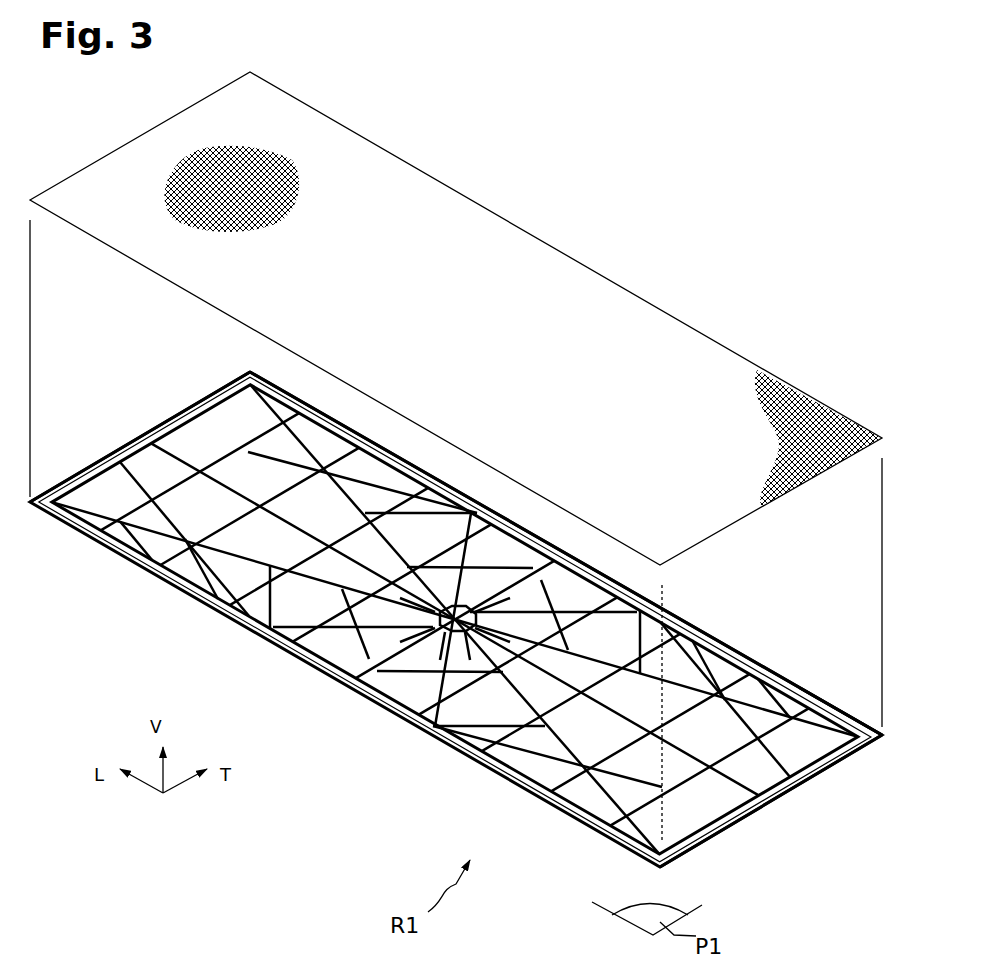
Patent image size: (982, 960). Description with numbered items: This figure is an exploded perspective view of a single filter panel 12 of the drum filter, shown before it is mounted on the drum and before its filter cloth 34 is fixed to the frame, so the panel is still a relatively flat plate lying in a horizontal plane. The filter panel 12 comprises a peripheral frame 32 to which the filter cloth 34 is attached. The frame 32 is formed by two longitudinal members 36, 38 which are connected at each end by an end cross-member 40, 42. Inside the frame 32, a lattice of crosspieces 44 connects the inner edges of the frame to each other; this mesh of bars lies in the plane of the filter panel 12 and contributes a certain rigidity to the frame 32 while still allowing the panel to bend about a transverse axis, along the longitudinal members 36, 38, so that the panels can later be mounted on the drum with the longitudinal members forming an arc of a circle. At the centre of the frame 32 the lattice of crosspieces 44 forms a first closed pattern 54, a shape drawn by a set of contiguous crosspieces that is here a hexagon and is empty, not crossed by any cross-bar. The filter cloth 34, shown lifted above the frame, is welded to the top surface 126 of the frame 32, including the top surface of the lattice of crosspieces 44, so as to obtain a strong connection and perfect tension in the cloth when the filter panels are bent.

The filter panel 12 is at (456, 399).
The filter cloth 34 is at (458, 185).
The peripheral frame 32 is at (86, 540).
The end cross-member 40 is at (90, 457).
The longitudinal member 38 is at (741, 645).
The end cross-member 42 is at (765, 831).
The top surface 126 is at (810, 703).
The longitudinal member 36 is at (216, 624).
The crosspieces 44 is at (630, 852).
The first closed pattern 54 is at (432, 654).